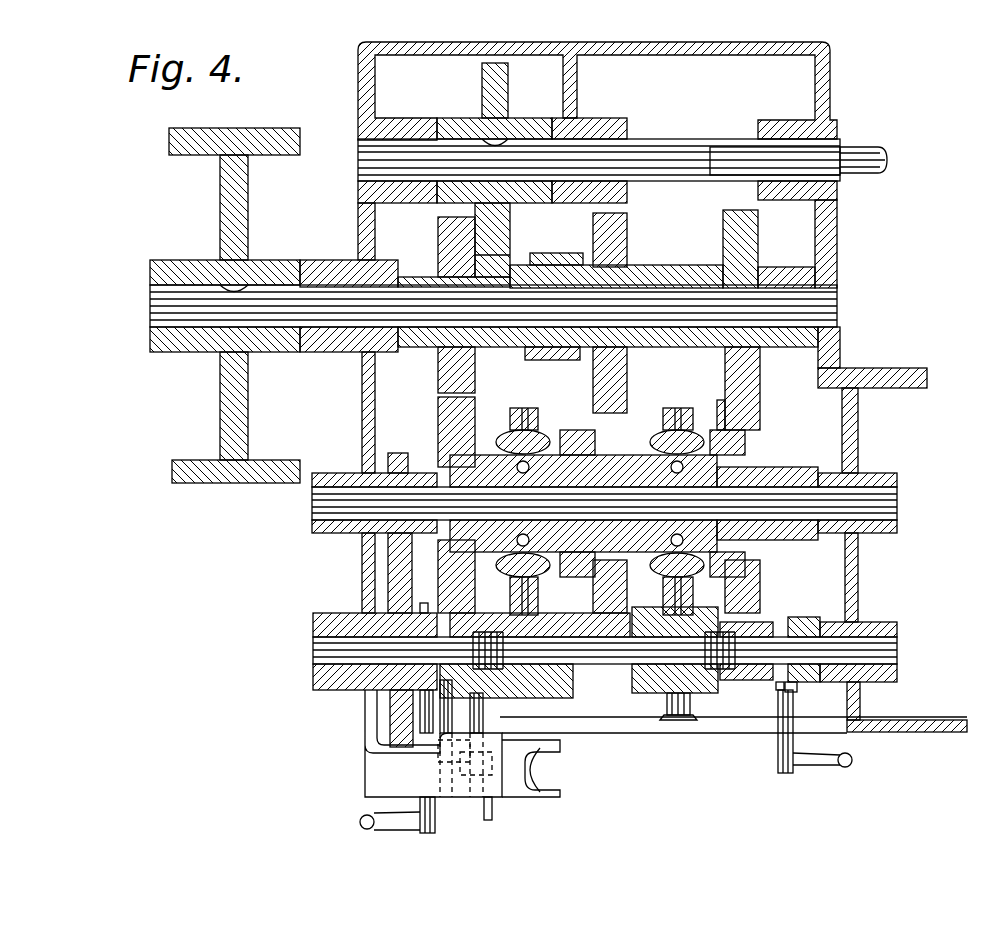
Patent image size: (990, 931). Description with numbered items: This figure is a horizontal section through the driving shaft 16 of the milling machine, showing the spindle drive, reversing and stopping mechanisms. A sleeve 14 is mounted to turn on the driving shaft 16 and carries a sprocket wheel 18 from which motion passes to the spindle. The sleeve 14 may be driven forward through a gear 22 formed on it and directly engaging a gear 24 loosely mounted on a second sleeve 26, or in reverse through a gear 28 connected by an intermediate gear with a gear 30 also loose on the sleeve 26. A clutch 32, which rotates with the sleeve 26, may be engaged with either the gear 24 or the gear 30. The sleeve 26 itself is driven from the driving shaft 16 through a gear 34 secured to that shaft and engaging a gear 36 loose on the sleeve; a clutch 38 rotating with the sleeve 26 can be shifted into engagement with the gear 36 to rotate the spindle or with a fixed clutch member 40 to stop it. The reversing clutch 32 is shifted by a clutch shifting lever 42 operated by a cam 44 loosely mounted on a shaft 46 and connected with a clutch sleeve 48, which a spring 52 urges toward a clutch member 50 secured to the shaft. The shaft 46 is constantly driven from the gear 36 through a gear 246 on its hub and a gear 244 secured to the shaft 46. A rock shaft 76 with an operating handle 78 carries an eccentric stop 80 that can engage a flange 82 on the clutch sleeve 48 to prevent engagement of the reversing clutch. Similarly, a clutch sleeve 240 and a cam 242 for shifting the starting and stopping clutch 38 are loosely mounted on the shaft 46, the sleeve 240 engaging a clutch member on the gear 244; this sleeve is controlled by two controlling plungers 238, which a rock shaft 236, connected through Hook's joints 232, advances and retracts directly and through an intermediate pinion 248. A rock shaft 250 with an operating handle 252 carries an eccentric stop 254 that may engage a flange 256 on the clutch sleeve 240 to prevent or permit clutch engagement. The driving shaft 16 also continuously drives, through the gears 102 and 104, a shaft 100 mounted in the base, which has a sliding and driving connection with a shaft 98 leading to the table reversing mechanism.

The sleeve 14 is at (680, 270).
The driving shaft 16 is at (722, 300).
The sprocket wheel 18 is at (555, 262).
The gear 22 is at (750, 240).
The gear 24 is at (752, 416).
The sleeve 26 is at (776, 485).
The gear 28 is at (620, 234).
The gear 30 is at (640, 425).
The clutch 32 is at (748, 571).
The gear 34 is at (445, 384).
The gear 36 is at (448, 420).
The clutch 38 is at (497, 436).
The fixed clutch member 40 is at (582, 428).
The clutch shifting lever 42 is at (662, 596).
The cam 44 is at (640, 695).
The shaft 46 is at (880, 651).
The clutch sleeve 48 is at (766, 628).
The clutch member 50 is at (812, 684).
The spring 52 is at (694, 706).
The rock shaft 76 is at (790, 775).
The operating handle 78 is at (802, 766).
The eccentric stop 80 is at (793, 694).
The flange 82 is at (776, 692).
The shaft 98 is at (866, 152).
The shaft 100 is at (672, 158).
The gear 102 is at (497, 122).
The gear 104 is at (512, 260).
The Hook's joints 232 is at (561, 791).
The rock shaft 236 is at (488, 783).
The controlling plungers 238 is at (447, 800).
The clutch sleeve 240 is at (340, 697).
The cam 242 is at (560, 692).
The gear 244 is at (398, 572).
The gear 246 is at (390, 462).
The intermediate pinion 248 is at (468, 760).
The rock shaft 250 is at (430, 727).
The operating handle 252 is at (358, 824).
The eccentric stop 254 is at (428, 694).
The flange 256 is at (424, 612).